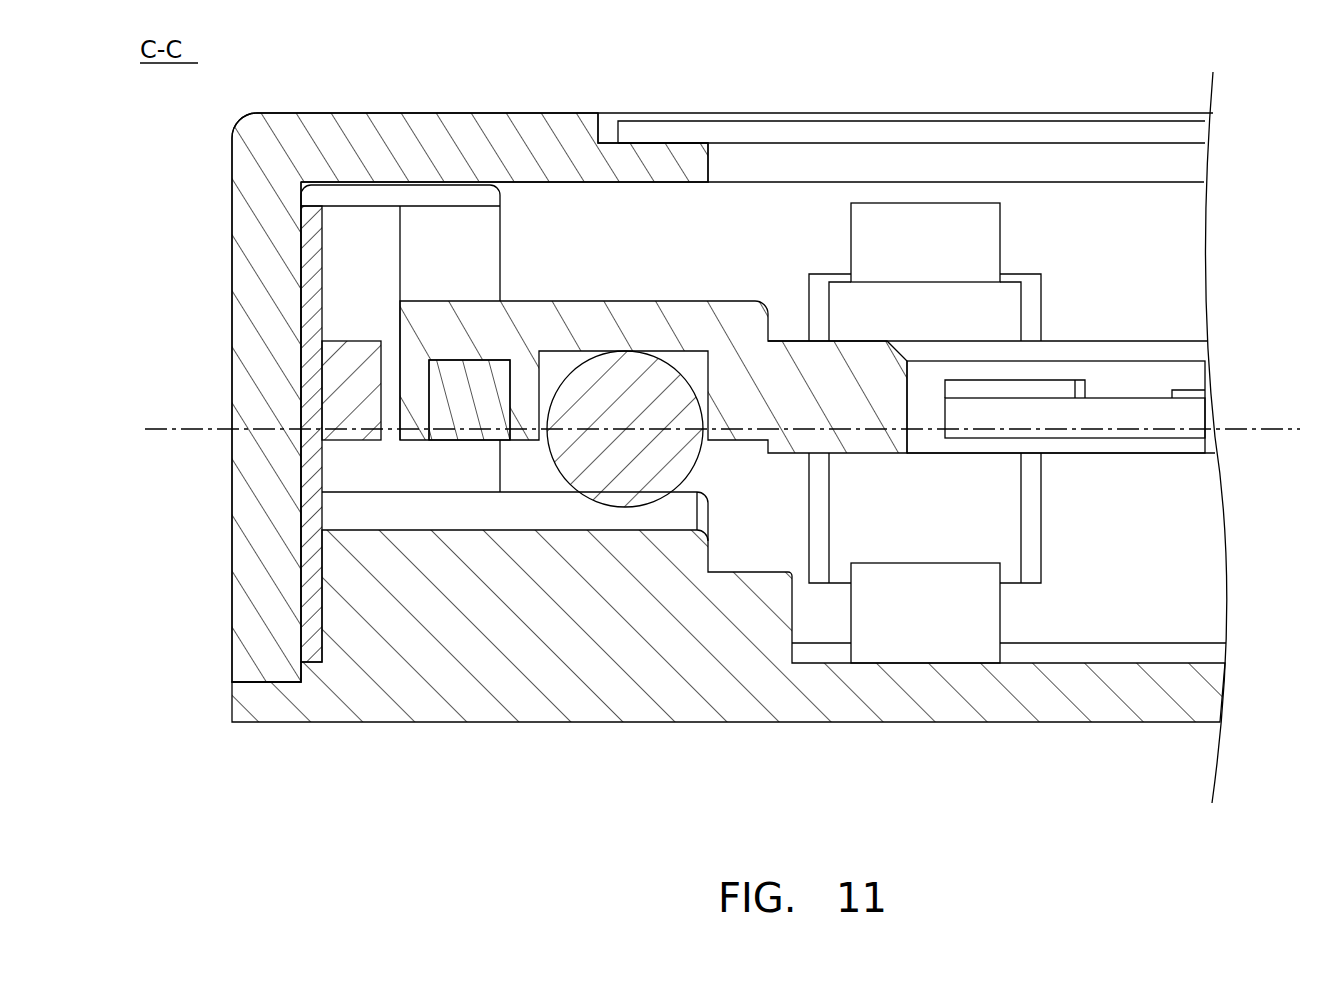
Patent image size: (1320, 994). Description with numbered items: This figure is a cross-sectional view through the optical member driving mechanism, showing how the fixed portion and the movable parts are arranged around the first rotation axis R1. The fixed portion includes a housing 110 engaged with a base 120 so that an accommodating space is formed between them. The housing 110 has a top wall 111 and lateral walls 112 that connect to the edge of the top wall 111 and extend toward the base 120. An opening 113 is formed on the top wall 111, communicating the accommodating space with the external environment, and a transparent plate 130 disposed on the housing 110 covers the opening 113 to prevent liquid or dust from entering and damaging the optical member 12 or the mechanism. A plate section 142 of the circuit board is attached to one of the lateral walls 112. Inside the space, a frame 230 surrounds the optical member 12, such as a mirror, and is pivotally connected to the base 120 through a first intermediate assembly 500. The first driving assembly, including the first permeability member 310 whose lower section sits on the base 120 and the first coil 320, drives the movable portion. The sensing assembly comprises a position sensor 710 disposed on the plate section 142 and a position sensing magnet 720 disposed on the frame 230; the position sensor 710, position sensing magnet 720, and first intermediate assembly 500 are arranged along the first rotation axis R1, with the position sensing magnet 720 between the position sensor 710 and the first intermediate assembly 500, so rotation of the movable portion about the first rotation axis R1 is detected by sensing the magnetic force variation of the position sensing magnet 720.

The housing 110 is at (232, 513).
The top wall 111 is at (347, 130).
The lateral walls 112 is at (260, 398).
The opening 113 is at (912, 168).
The base 120 is at (260, 690).
The transparent plate 130 is at (662, 130).
The plate section 142 is at (307, 272).
The frame 230 is at (735, 325).
The first permeability member 310 is at (970, 235).
The first coil 320 is at (1022, 308).
The first intermediate assembly 500 is at (627, 470).
The position sensor 710 is at (335, 368).
The position sensing magnet 720 is at (470, 410).
The optical member 12 is at (1108, 405).
The first rotation axis R1 is at (1275, 425).